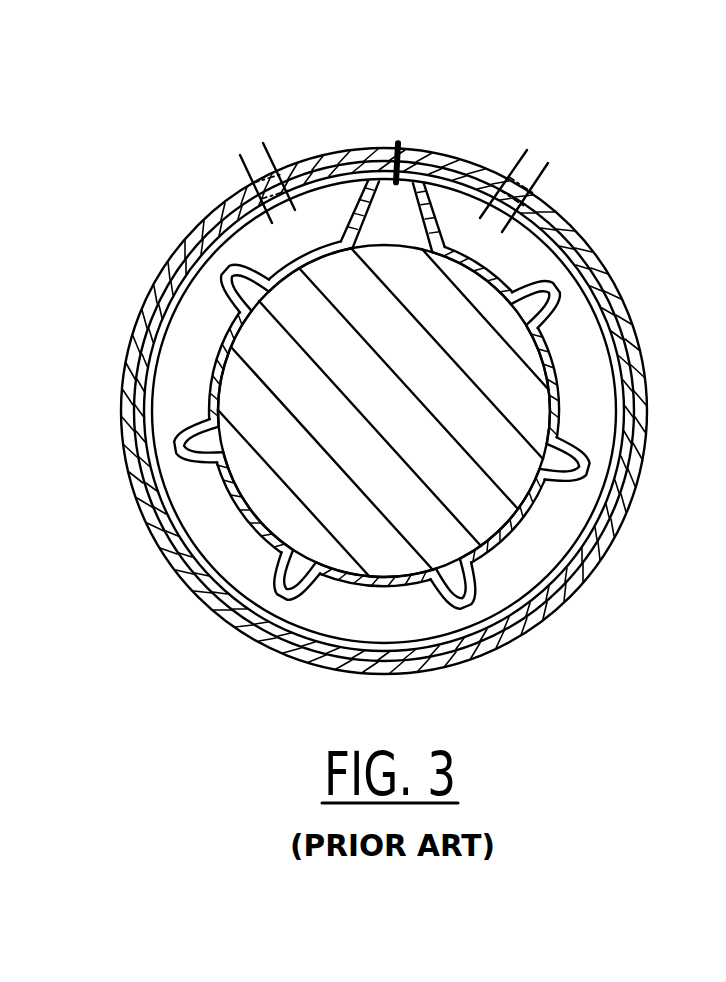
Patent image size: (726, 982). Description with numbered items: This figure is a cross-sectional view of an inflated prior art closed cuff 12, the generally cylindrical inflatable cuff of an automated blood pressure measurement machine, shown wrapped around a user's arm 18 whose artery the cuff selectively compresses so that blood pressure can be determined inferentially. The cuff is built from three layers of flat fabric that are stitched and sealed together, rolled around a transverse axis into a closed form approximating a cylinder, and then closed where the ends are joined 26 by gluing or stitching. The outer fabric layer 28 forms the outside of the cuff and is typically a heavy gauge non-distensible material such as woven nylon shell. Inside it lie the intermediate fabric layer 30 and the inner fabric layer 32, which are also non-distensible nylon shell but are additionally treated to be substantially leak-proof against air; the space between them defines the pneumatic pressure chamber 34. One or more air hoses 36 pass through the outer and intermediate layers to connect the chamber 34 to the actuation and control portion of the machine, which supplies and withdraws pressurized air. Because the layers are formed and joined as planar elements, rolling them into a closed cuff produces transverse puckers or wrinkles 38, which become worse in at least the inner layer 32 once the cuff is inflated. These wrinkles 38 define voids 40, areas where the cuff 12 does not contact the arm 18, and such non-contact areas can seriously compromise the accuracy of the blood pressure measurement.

The closed inflatable cuff 12 is at (660, 246).
The user's arm 18 is at (403, 414).
The joined ends 26 is at (405, 144).
The outer fabric layer 28 is at (616, 303).
The intermediate fabric layer 30 is at (612, 333).
The inner fabric layer 32 is at (556, 369).
The pneumatic pressure chamber 34 is at (587, 413).
The air hoses 36 is at (265, 152).
The wrinkles 38 is at (212, 275).
The voids 40 is at (245, 290).